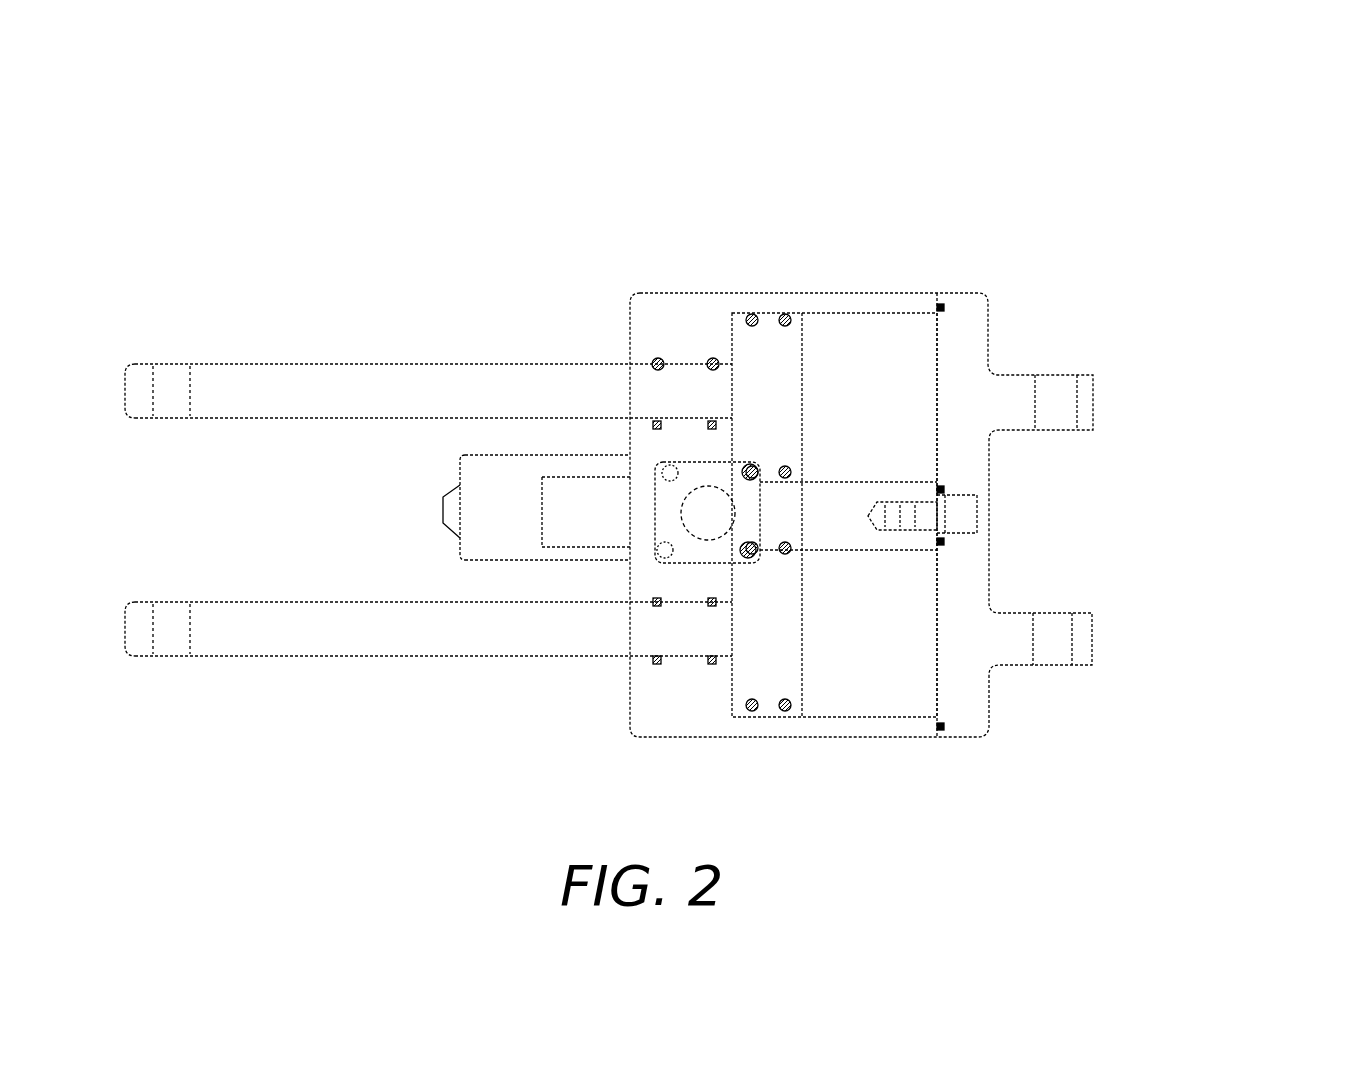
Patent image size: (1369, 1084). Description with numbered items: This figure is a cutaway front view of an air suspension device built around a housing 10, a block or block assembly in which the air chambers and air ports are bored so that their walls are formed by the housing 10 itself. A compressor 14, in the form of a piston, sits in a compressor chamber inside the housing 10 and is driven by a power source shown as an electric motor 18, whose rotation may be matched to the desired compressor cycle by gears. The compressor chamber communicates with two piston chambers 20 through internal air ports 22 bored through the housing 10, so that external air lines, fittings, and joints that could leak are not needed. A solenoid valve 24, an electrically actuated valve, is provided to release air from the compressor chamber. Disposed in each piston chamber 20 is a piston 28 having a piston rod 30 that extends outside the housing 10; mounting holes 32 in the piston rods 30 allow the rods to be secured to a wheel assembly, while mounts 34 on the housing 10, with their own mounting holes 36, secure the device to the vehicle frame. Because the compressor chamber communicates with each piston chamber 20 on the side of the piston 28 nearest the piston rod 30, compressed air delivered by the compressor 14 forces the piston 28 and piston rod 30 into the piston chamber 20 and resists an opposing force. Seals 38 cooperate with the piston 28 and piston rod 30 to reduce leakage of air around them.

The housing 10 is at (690, 285).
The compressor 14 is at (692, 532).
The electric motor 18 is at (548, 460).
The piston chamber 20 is at (730, 645).
The internal air port 22 is at (728, 473).
The solenoid valve 24 is at (560, 542).
The piston 28 is at (807, 645).
The piston rod 30 is at (410, 613).
The mounting holes 32 is at (168, 418).
The mounts 34 is at (1098, 367).
The mounting holes 36 is at (1055, 367).
The seals 38 is at (713, 356).